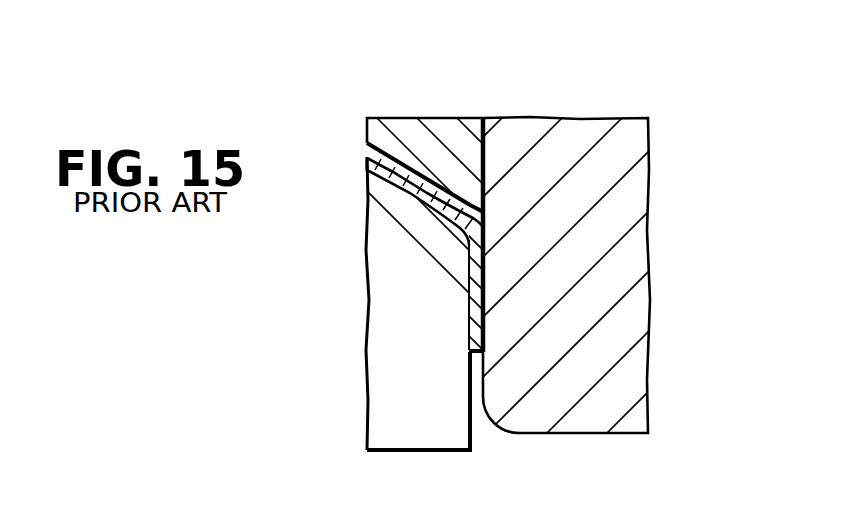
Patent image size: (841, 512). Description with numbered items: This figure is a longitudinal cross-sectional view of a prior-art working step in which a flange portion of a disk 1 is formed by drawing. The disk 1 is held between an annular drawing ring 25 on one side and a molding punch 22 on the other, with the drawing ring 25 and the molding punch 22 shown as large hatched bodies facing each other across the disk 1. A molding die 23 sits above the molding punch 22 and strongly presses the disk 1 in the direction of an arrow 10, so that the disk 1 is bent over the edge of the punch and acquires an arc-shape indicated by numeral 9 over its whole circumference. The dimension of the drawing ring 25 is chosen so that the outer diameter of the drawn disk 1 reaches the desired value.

The disk 1 is at (475, 298).
The arc-shape 9 is at (430, 203).
The arrow 10 is at (453, 163).
The molding punch 22 is at (378, 381).
The molding die 23 is at (411, 143).
The annular drawing ring 25 is at (630, 363).